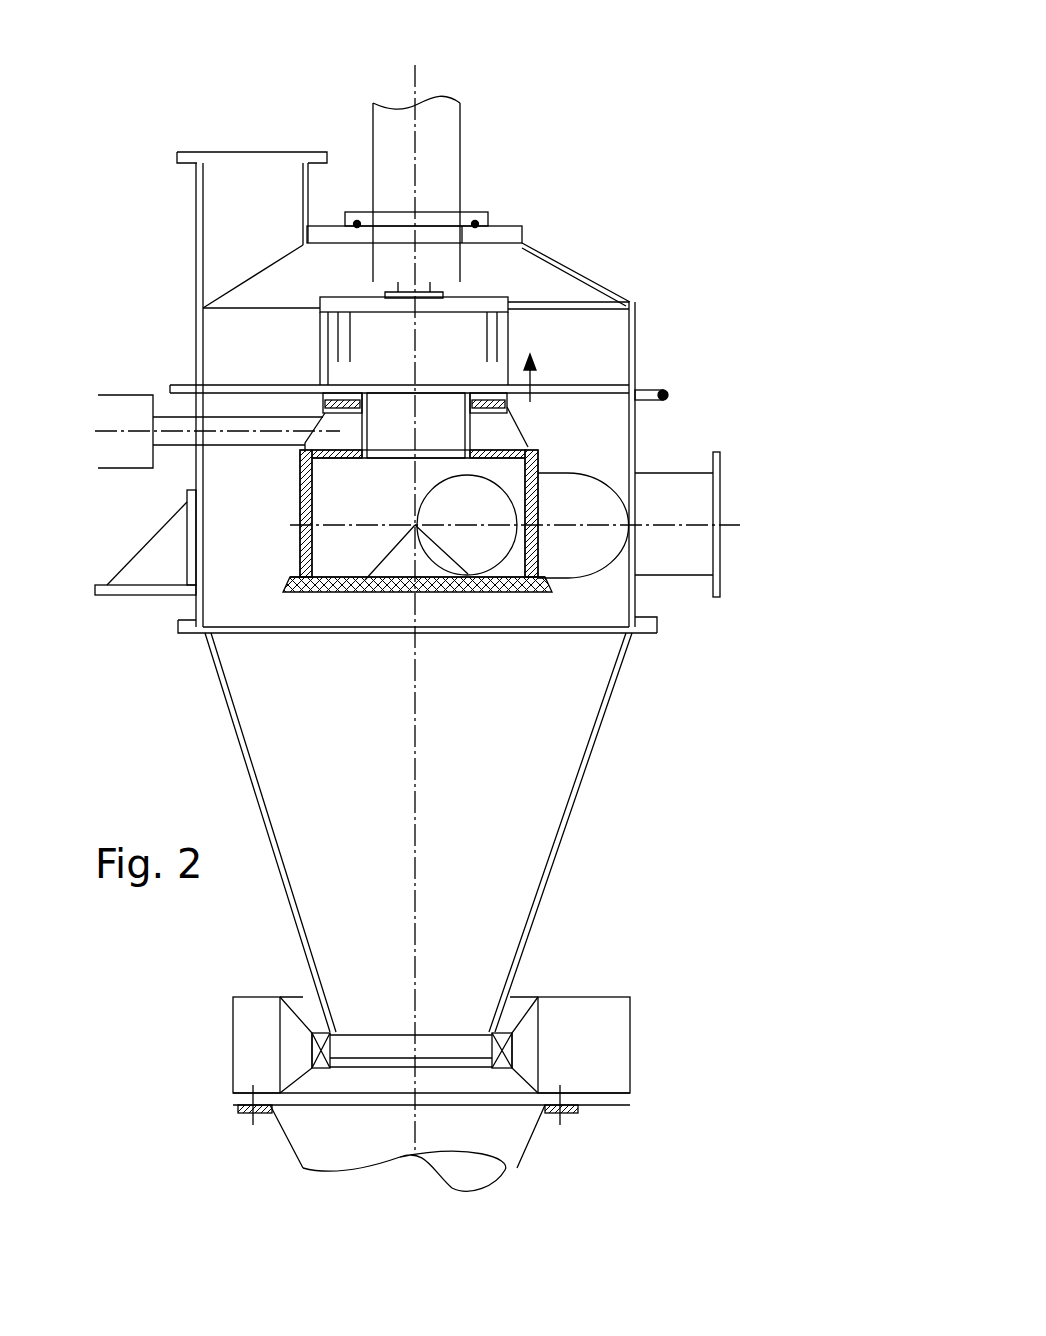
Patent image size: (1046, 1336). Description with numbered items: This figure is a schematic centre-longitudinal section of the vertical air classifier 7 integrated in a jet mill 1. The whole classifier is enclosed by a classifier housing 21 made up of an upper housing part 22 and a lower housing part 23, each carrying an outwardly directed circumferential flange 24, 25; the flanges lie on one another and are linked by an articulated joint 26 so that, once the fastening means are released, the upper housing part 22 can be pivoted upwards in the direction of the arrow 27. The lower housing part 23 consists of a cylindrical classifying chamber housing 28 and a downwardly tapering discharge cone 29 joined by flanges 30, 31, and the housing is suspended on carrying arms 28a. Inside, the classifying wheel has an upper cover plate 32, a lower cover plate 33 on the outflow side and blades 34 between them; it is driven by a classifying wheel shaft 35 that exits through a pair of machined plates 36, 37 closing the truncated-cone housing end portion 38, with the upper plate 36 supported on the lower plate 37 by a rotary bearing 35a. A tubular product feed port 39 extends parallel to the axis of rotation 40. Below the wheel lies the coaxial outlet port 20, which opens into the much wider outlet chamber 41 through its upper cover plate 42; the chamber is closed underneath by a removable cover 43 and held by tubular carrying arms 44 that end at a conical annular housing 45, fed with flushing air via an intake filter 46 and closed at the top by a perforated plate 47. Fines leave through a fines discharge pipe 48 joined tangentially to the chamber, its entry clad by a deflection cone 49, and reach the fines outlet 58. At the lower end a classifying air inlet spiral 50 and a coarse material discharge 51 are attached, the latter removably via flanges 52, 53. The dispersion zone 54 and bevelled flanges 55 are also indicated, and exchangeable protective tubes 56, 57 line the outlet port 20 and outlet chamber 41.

The jet mill 1 is at (739, 70).
The air classifier 7 is at (696, 232).
The outlet port 20 is at (520, 445).
The classifier housing 21 is at (201, 352).
The upper housing part 22 is at (618, 296).
The lower housing part 23 is at (561, 854).
The circumferential flange 24 is at (660, 392).
The circumferential flange 25 is at (665, 404).
The articulated joint 26 is at (670, 394).
The arrow 27 is at (537, 382).
The classifying chamber housing 28 is at (640, 452).
The carrying arms 28a is at (145, 572).
The discharge cone 29 is at (597, 745).
The flange 30 is at (660, 620).
The flange 31 is at (643, 635).
The upper cover plate 32 is at (465, 303).
The lower cover plate 33 is at (320, 380).
The blades 34 is at (478, 332).
The classifying wheel shaft 35 is at (385, 126).
The rotary bearing 35a is at (357, 220).
The upper plate 36 is at (470, 226).
The lower plate 37 is at (500, 235).
The housing end portion 38 is at (572, 268).
The product feed port 39 is at (266, 222).
The axis of rotation 40 is at (418, 76).
The outlet chamber 41 is at (300, 499).
The upper cover plate 42 is at (337, 460).
The removable cover 43 is at (498, 597).
The carrying arms 44 is at (178, 440).
The annular housing 45 is at (523, 428).
The intake filter 46 is at (108, 412).
The perforated plate 47 is at (345, 400).
The fines discharge pipe 48 is at (592, 563).
The deflection cone 49 is at (397, 560).
The classifying air inlet spiral 50 is at (592, 1020).
The coarse material discharge 51 is at (520, 1147).
The flange 52 is at (573, 1110).
The flange 53 is at (247, 1110).
The dispersion zone 54 is at (490, 1037).
The flanges 55 is at (337, 1038).
The protective tube 56 is at (367, 452).
The protective tube 57 is at (340, 597).
The fines outlet 58 is at (738, 508).